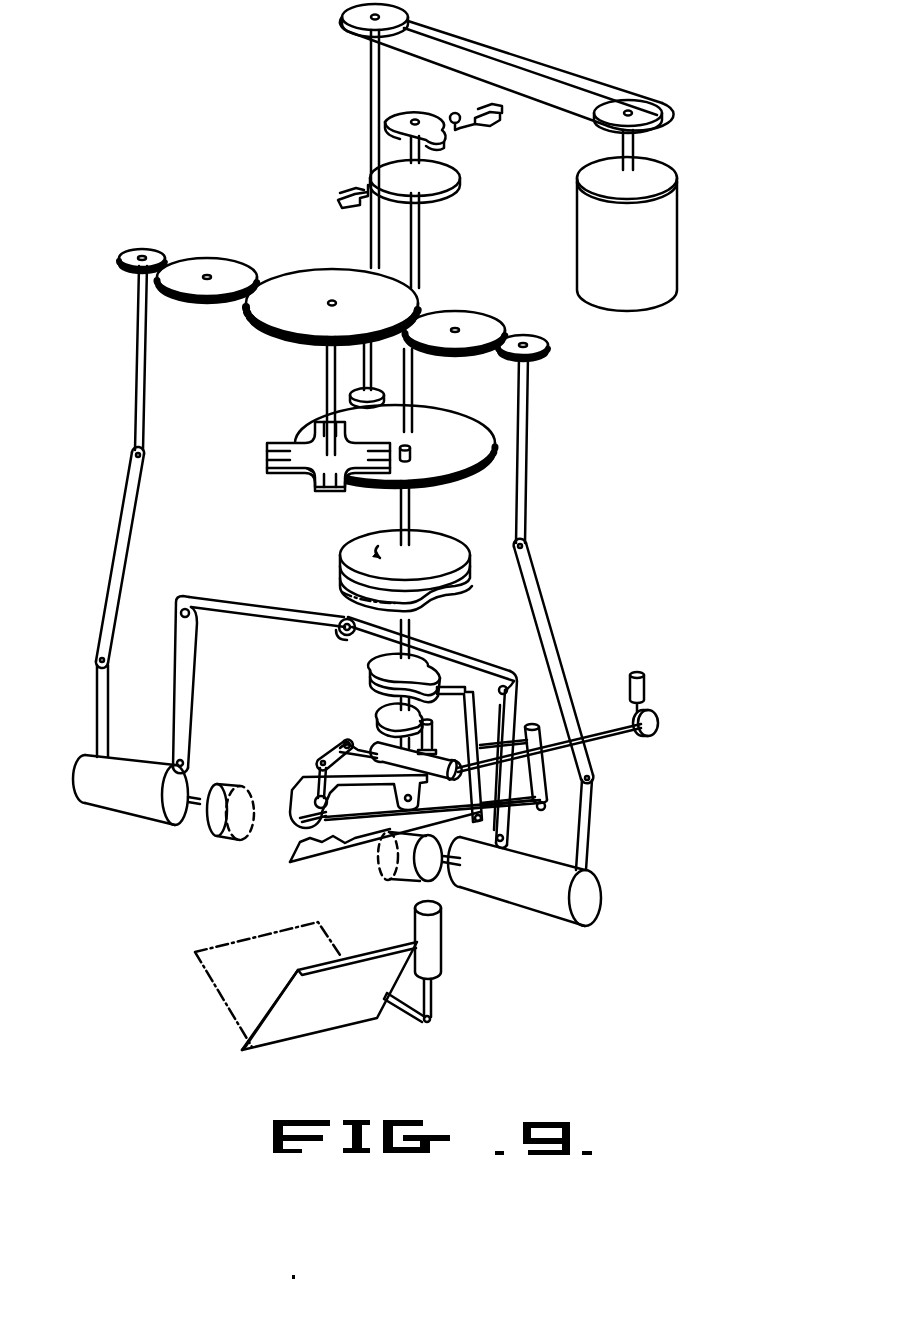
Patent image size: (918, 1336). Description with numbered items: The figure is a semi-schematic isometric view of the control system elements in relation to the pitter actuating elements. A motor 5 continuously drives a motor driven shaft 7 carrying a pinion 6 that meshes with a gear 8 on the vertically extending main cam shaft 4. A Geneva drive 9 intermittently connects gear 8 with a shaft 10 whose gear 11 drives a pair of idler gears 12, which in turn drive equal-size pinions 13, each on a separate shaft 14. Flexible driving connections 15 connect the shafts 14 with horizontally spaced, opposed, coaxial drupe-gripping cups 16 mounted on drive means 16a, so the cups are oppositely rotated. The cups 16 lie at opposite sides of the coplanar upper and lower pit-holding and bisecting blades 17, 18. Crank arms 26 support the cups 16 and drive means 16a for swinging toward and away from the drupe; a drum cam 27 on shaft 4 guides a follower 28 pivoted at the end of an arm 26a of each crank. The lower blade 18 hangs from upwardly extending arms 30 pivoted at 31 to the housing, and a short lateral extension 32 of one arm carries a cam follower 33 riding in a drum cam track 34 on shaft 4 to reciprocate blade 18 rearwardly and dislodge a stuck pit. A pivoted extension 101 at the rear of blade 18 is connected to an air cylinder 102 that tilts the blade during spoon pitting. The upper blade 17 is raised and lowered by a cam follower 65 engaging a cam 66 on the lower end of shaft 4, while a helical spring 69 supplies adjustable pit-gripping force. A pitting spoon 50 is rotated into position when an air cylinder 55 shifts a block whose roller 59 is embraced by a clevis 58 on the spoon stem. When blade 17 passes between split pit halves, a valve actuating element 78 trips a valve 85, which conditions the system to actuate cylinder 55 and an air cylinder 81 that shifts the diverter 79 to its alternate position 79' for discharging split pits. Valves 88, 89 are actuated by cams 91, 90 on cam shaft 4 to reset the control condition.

The main cam shaft 4 is at (414, 390).
The motor 5 is at (672, 230).
The pinion 6 is at (350, 395).
The motor driven shaft 7 is at (371, 236).
The gear 8 is at (465, 410).
The Geneva drive 9 is at (358, 498).
The shaft 10 is at (326, 358).
The gear 11 is at (318, 270).
The idler gears 12 is at (208, 262).
The pinions 13 is at (138, 246).
The shafts 14 is at (148, 385).
The flexible driving connections 15 is at (116, 548).
The drupe-gripping elements 16 is at (204, 836).
The drive means 16a is at (135, 822).
The upper pit-holding and bisecting blade 17 is at (336, 793).
The lower pit-holding and bisecting blade 18 is at (305, 862).
The crank arms 26 is at (200, 702).
The arm of crank 26a is at (258, 612).
The drum cam 27 is at (464, 598).
The follower 28 is at (337, 640).
The arms 30 is at (500, 728).
The pivot 31 is at (505, 670).
The lateral extension 32 is at (462, 685).
The cam follower 33 is at (436, 704).
The drum cam track 34 is at (370, 672).
The pitting spoon 50 is at (300, 820).
The air cylinder 55 is at (437, 780).
The clevis 58 is at (316, 752).
The roller 59 is at (344, 740).
The cam follower 65 is at (436, 738).
The cam 66 is at (377, 719).
The helical spring 69 is at (600, 742).
The valve actuating element 78 is at (660, 718).
The diverter 79 is at (333, 1006).
The broken line position of diverter 79' is at (253, 984).
The air cylinder 81 is at (442, 965).
The valve 85 is at (646, 680).
The valve 88 is at (343, 190).
The valve 89 is at (505, 125).
The cam 90 is at (398, 120).
The cam 91 is at (455, 178).
The pivoted extension 101 is at (545, 812).
The air cylinder 102 is at (548, 806).